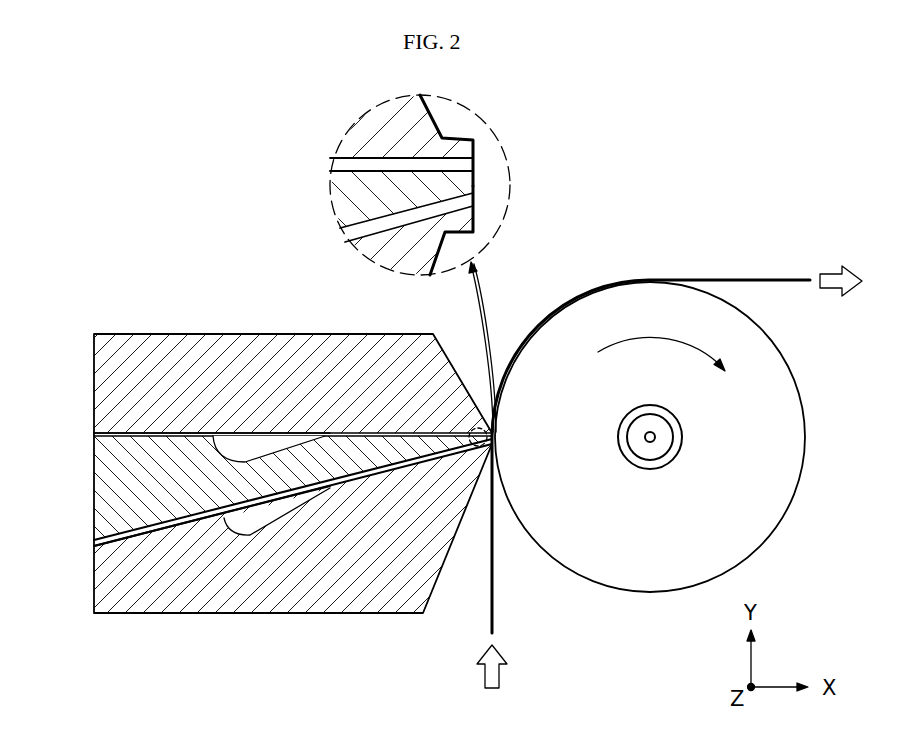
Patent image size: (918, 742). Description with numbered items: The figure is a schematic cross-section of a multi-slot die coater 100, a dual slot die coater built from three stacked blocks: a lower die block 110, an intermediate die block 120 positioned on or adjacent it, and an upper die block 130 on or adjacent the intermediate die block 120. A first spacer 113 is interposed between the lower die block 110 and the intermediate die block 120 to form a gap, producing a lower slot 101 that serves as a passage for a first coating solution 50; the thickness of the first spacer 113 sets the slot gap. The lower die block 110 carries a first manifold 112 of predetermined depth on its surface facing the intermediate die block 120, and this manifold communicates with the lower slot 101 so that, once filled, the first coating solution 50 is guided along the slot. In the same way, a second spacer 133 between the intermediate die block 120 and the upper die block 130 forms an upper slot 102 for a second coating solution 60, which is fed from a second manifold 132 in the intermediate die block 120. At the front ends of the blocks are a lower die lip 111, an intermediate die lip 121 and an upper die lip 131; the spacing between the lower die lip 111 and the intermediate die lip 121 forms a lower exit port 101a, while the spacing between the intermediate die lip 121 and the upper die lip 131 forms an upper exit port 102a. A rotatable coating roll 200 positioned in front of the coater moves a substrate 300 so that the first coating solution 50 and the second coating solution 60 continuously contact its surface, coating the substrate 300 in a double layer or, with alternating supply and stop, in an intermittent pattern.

The multi-slot die coater 100 is at (94, 290).
The upper die block 130 is at (78, 388).
The intermediate die block 120 is at (78, 477).
The lower die block 110 is at (78, 577).
The second spacer 133 is at (118, 433).
The second coating solution 60 is at (246, 450).
The second manifold 132 is at (258, 433).
The upper slot 102 is at (286, 433).
The first spacer 113 is at (120, 547).
The first coating solution 50 is at (254, 524).
The first manifold 112 is at (268, 522).
The lower slot 101 is at (300, 505).
The upper die lip 131 is at (462, 149).
The upper exit port 102a is at (486, 160).
The intermediate die lip 121 is at (465, 178).
The lower exit port 101a is at (486, 197).
The lower die lip 111 is at (462, 222).
The substrate 300 is at (496, 612).
The coating roll 200 is at (650, 593).